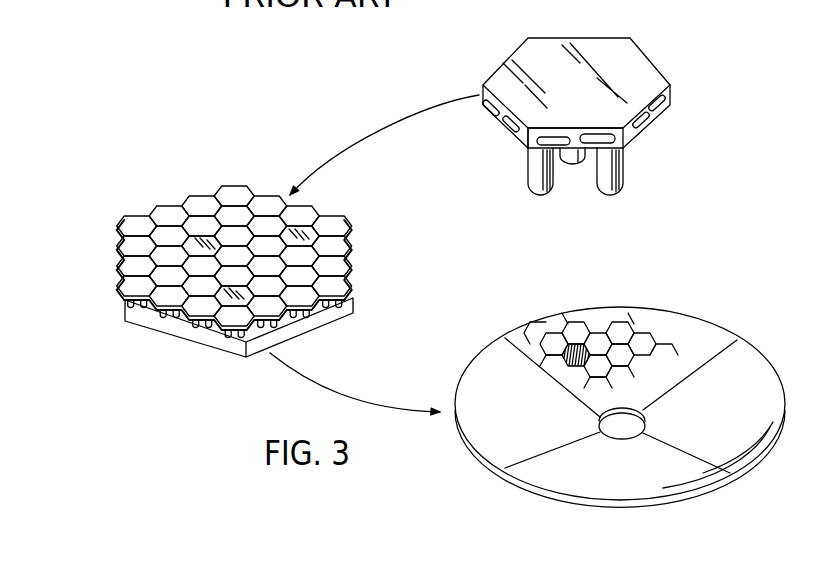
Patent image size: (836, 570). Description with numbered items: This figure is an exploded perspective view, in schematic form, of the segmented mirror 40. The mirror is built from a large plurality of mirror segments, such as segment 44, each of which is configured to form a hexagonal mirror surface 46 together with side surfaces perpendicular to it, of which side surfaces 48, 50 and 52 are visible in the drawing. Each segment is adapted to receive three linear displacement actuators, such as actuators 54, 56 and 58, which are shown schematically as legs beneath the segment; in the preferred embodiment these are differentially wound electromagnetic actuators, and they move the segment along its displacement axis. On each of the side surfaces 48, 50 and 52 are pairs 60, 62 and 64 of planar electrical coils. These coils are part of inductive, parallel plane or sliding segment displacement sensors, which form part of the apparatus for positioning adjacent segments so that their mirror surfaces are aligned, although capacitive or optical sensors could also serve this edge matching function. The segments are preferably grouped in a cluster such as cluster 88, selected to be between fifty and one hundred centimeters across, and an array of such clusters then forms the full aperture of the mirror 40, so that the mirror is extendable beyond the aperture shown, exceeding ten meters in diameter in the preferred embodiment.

The segmented mirror 40 is at (765, 362).
The mirror segment 44 is at (667, 33).
The hexagonal mirror surface 46 is at (523, 67).
The side surface 48 is at (486, 122).
The side surface 50 is at (598, 138).
The side surface 52 is at (673, 116).
The linear displacement actuator 54 is at (537, 173).
The linear displacement actuator 56 is at (573, 158).
The linear displacement actuator 58 is at (614, 178).
The pair of planar electrical coils 60 is at (493, 120).
The pair of planar electrical coils 62 is at (577, 128).
The pair of planar electrical coils 64 is at (658, 124).
The cluster 88 is at (112, 282).